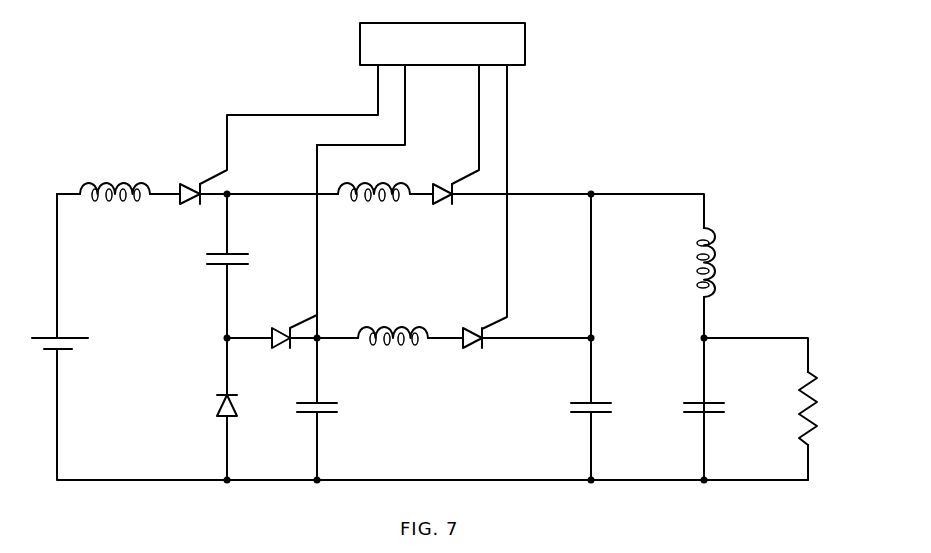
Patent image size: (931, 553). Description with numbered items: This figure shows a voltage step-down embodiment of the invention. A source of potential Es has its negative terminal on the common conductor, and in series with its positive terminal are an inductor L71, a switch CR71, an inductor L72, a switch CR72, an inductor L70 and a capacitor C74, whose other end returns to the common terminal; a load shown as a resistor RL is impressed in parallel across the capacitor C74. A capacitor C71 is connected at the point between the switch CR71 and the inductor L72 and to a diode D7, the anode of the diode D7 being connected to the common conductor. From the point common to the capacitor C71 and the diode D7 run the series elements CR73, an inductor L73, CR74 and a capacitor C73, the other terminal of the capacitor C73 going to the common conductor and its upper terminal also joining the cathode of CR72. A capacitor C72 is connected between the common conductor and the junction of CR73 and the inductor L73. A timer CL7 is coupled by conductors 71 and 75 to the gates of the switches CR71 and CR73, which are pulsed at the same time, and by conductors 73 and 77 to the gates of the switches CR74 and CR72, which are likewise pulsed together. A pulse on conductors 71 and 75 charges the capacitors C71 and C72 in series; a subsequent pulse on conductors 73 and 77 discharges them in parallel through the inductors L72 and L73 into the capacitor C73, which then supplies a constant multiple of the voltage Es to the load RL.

The timer CL7 is at (525, 48).
The conductor 71 is at (378, 95).
The conductor 75 is at (405, 93).
The conductor 77 is at (479, 140).
The conductor 73 is at (507, 142).
The inductor L71 is at (105, 185).
The inductor L72 is at (368, 197).
The inductor L73 is at (378, 330).
The inductor L70 is at (714, 266).
The switch CR71 is at (190, 204).
The switch CR72 is at (440, 203).
The switch CR73 is at (271, 332).
The switch CR74 is at (470, 348).
The diode D7 is at (215, 405).
The capacitor C71 is at (212, 267).
The capacitor C72 is at (328, 415).
The capacitor C73 is at (598, 415).
The capacitor C74 is at (715, 415).
The source of potential Es is at (75, 342).
The load resistor RL is at (800, 394).